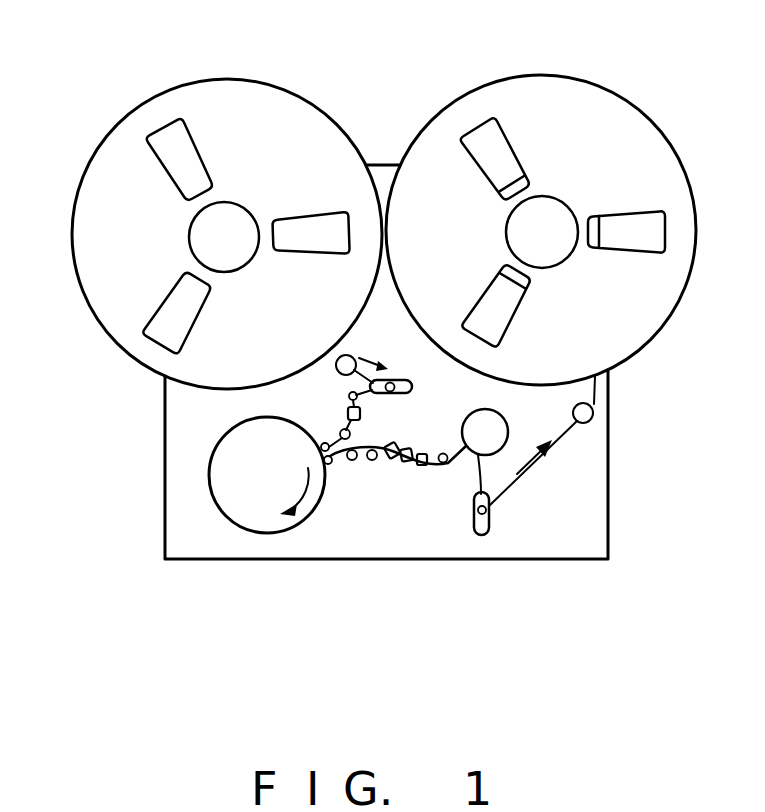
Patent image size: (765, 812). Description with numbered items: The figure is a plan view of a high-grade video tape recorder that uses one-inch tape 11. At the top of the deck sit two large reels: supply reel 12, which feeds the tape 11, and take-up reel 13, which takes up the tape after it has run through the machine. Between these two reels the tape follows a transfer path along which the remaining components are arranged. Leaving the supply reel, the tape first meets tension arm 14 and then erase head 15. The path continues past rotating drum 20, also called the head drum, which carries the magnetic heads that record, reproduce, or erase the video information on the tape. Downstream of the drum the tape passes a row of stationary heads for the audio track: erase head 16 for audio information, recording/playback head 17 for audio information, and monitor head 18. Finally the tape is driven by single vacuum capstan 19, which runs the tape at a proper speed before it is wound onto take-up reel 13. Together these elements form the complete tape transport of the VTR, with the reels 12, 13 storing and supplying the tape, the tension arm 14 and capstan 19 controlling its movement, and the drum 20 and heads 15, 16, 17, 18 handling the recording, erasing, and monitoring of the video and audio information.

The tape 11 is at (573, 442).
The supply reel 12 is at (226, 78).
The take-up reel 13 is at (588, 76).
The tension arm 14 is at (398, 379).
The erase head 15 is at (366, 414).
The erase head for audio information 16 is at (383, 460).
The recording/playback head for audio information 17 is at (403, 463).
The monitor head 18 is at (421, 466).
The single vacuum capstan 19 is at (508, 422).
The rotating drum 20 is at (242, 522).